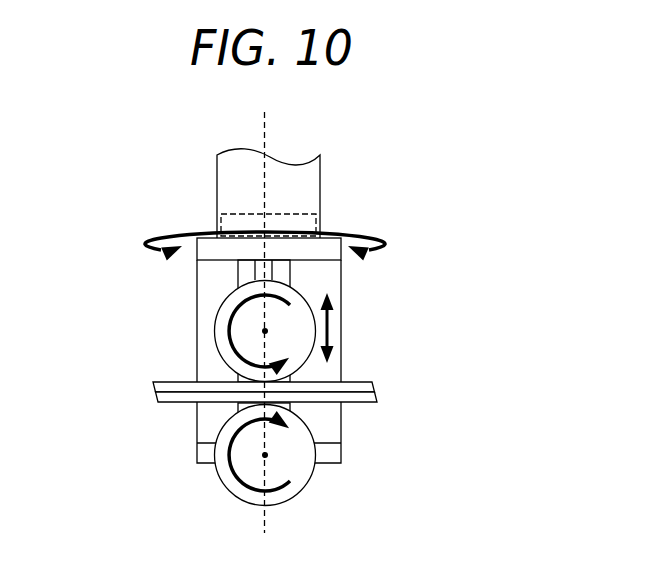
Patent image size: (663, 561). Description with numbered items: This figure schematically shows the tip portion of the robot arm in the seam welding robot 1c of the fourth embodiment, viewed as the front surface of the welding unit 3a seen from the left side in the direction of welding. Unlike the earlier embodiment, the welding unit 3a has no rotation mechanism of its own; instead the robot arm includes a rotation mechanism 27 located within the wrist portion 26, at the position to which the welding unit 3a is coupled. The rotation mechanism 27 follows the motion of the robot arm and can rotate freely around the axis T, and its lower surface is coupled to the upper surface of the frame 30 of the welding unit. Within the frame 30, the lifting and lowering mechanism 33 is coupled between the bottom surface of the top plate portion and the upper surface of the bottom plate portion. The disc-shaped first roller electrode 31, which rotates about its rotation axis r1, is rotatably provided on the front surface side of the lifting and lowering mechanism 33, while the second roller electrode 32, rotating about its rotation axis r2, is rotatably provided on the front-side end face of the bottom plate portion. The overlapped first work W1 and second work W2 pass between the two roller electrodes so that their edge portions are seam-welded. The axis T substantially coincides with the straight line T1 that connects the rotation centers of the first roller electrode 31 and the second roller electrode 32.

The seam welding robot 1c is at (101, 148).
The wrist portion 26 is at (233, 173).
The rotation mechanism 27 is at (300, 209).
The axis T is at (268, 127).
The welding unit 3a is at (420, 341).
The frame 30 is at (330, 422).
The lifting and lowering mechanism 33 is at (281, 277).
The first roller electrode 31 is at (228, 307).
The rotation axis r1 is at (262, 331).
The second roller electrode 32 is at (217, 473).
The rotation axis r2 is at (262, 455).
The first work W1 is at (153, 385).
The second work W2 is at (153, 398).
The straight line T1 is at (268, 521).